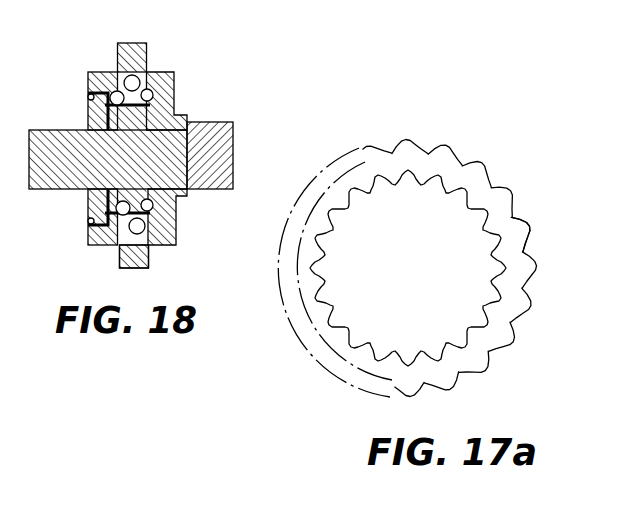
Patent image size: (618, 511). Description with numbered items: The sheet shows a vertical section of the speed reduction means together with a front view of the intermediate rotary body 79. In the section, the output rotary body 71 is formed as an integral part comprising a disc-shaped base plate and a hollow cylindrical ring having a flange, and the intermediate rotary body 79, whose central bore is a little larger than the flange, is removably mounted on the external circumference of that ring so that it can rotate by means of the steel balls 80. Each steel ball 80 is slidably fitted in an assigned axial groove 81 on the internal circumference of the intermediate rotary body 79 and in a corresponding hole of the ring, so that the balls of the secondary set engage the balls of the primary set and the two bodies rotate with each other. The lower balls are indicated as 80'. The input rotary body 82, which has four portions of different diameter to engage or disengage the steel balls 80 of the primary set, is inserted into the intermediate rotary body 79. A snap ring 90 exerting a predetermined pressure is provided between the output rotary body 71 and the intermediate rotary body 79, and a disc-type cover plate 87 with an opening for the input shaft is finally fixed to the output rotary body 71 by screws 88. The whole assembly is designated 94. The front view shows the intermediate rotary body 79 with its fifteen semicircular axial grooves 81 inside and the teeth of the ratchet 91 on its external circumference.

In FIG. 18, the intermediate rotary body 79 is at (136, 43).
In FIG. 17a, the intermediate rotary body 79 is at (584, 165).
In FIG. 18, the snap ring 90 is at (147, 73).
In FIG. 18, the cover plate 87 is at (92, 72).
In FIG. 18, the screws 88 is at (89, 95).
In FIG. 18, the input rotary body 82 is at (91, 156).
In FIG. 18, the output rotary body 71 is at (175, 80).
In FIG. 18, the roller assembly 94 is at (220, 95).
In FIG. 18, the lower bearing block 80' is at (83, 217).
In FIG. 18, the steel balls 80 is at (111, 269).
In FIG. 17a, the axial grooves 81 is at (484, 212).
In FIG. 17a, the ratchet 91 is at (540, 258).